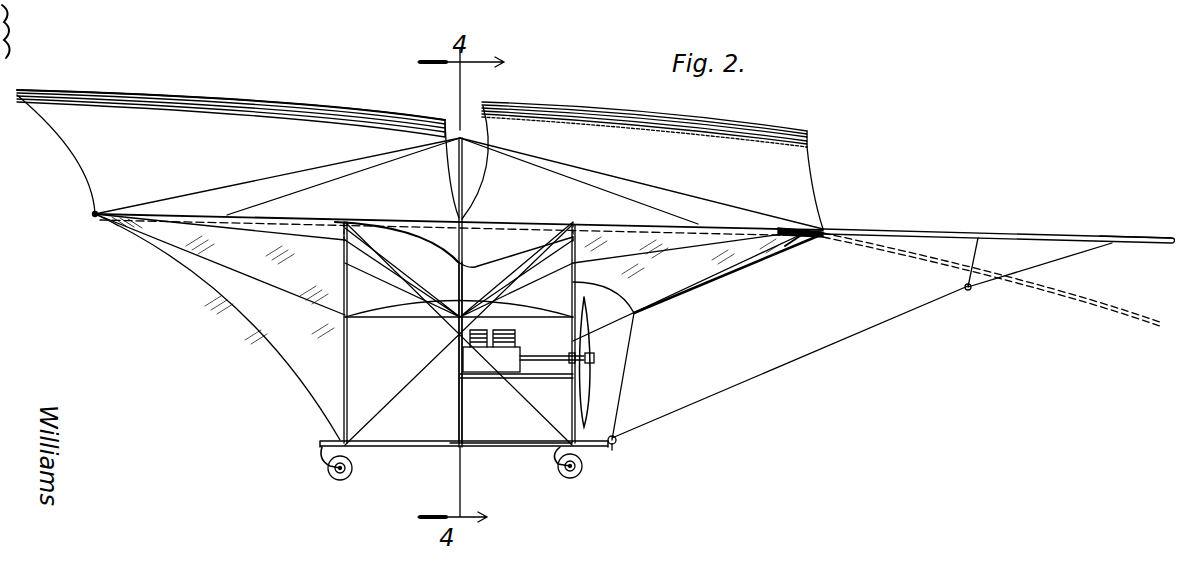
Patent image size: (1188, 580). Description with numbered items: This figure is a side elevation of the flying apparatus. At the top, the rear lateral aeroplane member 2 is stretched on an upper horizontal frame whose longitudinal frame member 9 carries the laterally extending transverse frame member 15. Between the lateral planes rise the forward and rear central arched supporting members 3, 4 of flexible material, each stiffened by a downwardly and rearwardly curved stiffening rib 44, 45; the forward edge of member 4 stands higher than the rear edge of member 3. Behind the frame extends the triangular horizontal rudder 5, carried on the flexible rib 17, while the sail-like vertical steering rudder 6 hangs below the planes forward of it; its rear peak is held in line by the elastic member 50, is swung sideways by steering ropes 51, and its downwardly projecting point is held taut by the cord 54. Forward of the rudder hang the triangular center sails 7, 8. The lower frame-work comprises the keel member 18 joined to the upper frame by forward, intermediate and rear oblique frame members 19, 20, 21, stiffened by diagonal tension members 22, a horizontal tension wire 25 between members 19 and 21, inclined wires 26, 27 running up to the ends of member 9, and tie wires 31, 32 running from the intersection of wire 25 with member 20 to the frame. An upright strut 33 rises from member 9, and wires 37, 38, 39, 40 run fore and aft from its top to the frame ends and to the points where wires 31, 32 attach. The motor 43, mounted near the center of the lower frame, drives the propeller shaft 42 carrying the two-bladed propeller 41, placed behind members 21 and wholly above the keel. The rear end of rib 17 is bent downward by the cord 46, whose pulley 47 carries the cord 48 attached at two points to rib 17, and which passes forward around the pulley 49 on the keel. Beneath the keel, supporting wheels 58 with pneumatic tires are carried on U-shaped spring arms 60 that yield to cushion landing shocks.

The rear lateral aeroplane member 2 is at (532, 222).
The forward central arched supporting member 3 is at (130, 110).
The rear central arched supporting member 4 is at (793, 182).
The horizontal rudder 5 is at (1138, 242).
The vertical steering rudder 6 is at (698, 262).
The forward center sail 7 is at (190, 263).
The rear center sail 8 is at (275, 345).
The longitudinal frame member 9 is at (92, 214).
The transverse frame member 15 is at (510, 226).
The flexible rib 17 is at (1070, 236).
The keel member 18 is at (491, 447).
The forward oblique frame member 19 is at (347, 370).
The intermediate oblique frame member 20 is at (458, 408).
The rear oblique frame member 21 is at (577, 333).
The oblique tension member 22 is at (395, 385).
The horizontal tension wire 25 is at (416, 318).
The inclined tension wire 26 is at (153, 238).
The inclined tension wire 27 is at (730, 284).
The inclined tie wire 31 is at (278, 243).
The inclined tie wire 32 is at (723, 300).
The upright strut 33 is at (462, 176).
The fore-and-aft bracing wire 37 is at (290, 182).
The fore-and-aft bracing wire 38 is at (622, 186).
The fore-and-aft bracing wire 39 is at (398, 160).
The fore-and-aft bracing wire 40 is at (580, 170).
The propeller 41 is at (606, 372).
The propeller shaft 42 is at (546, 358).
The motor 43 is at (493, 362).
The stiffening rib 44 is at (224, 100).
The stiffening rib 45 is at (592, 112).
The cord 46 is at (846, 342).
The pulley 47 is at (971, 292).
The cord 48 is at (1025, 272).
The pulley 49 is at (616, 436).
The elastic member 50 is at (822, 238).
The steering rope 51 is at (778, 245).
The cord 54 is at (625, 350).
The supporting wheel 58 is at (341, 478).
The U-shaped spring arm 60 is at (318, 455).